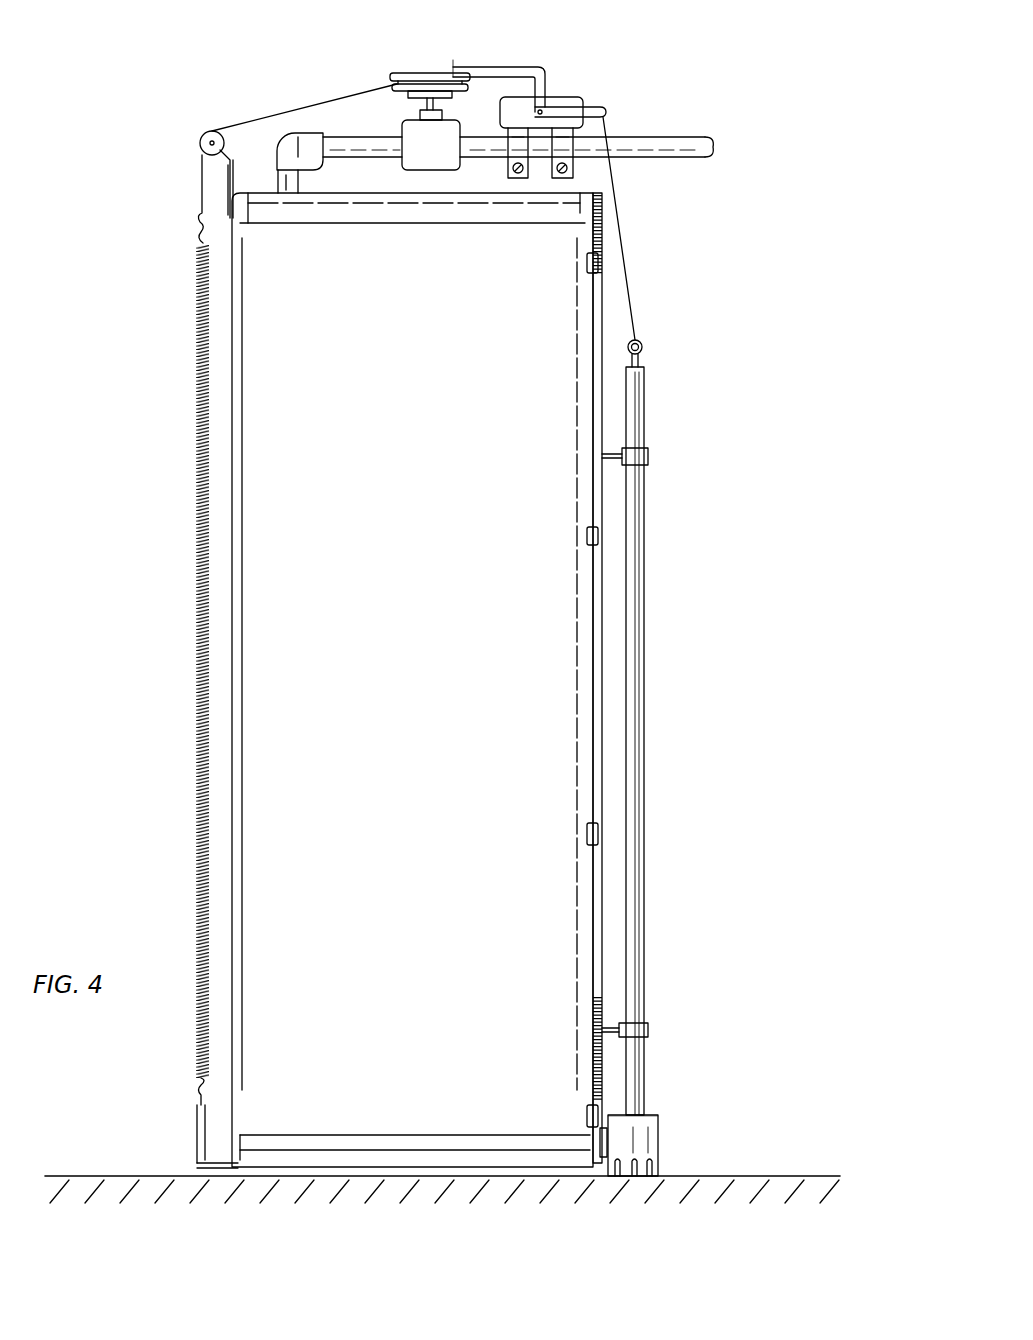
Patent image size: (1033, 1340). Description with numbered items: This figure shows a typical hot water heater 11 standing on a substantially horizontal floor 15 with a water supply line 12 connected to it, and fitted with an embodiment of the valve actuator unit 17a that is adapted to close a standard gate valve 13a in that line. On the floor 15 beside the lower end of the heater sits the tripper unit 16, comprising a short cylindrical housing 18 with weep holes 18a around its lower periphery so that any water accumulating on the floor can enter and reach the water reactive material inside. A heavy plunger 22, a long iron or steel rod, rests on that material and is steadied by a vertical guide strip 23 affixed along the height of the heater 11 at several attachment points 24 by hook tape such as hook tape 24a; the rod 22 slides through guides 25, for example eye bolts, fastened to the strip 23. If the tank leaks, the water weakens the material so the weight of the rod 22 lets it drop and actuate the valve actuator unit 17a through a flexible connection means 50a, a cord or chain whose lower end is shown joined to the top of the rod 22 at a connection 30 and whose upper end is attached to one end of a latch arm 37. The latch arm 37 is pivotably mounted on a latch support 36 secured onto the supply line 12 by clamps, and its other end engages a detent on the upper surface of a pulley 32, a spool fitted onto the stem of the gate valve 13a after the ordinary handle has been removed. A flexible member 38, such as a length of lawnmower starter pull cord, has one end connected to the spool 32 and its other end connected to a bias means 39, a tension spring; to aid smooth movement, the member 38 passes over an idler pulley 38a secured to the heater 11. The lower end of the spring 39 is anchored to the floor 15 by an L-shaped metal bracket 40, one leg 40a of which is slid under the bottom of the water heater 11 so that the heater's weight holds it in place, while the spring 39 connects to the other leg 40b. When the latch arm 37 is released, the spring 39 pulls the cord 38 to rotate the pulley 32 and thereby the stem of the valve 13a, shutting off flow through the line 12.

The hot water heater 11 is at (402, 662).
The water supply line 12 is at (663, 135).
The gate valve 13a is at (430, 172).
The floor 15 is at (767, 1176).
The tripper unit 16 is at (658, 1097).
The valve actuator unit 17a is at (445, 57).
The housing 18 is at (658, 1148).
The weep holes 18a is at (640, 1177).
The plunger 22 is at (647, 575).
The vertical guide strip 23 is at (593, 316).
The attachment points 24 is at (587, 263).
The hook tape 24a is at (600, 1150).
The guides 25 is at (650, 456).
The eyelet 30 is at (645, 347).
The pulley 32 is at (428, 73).
The latch support 36 is at (568, 97).
The latch arm 37 is at (528, 67).
The flexible member 38 is at (302, 102).
The idler pulley 38a is at (205, 133).
The bias means 39 is at (195, 466).
The L-shaped bracket 40 is at (185, 1143).
The bracket leg 40a is at (220, 1178).
The bracket leg 40b is at (197, 1118).
The flexible connection means 50a is at (630, 270).